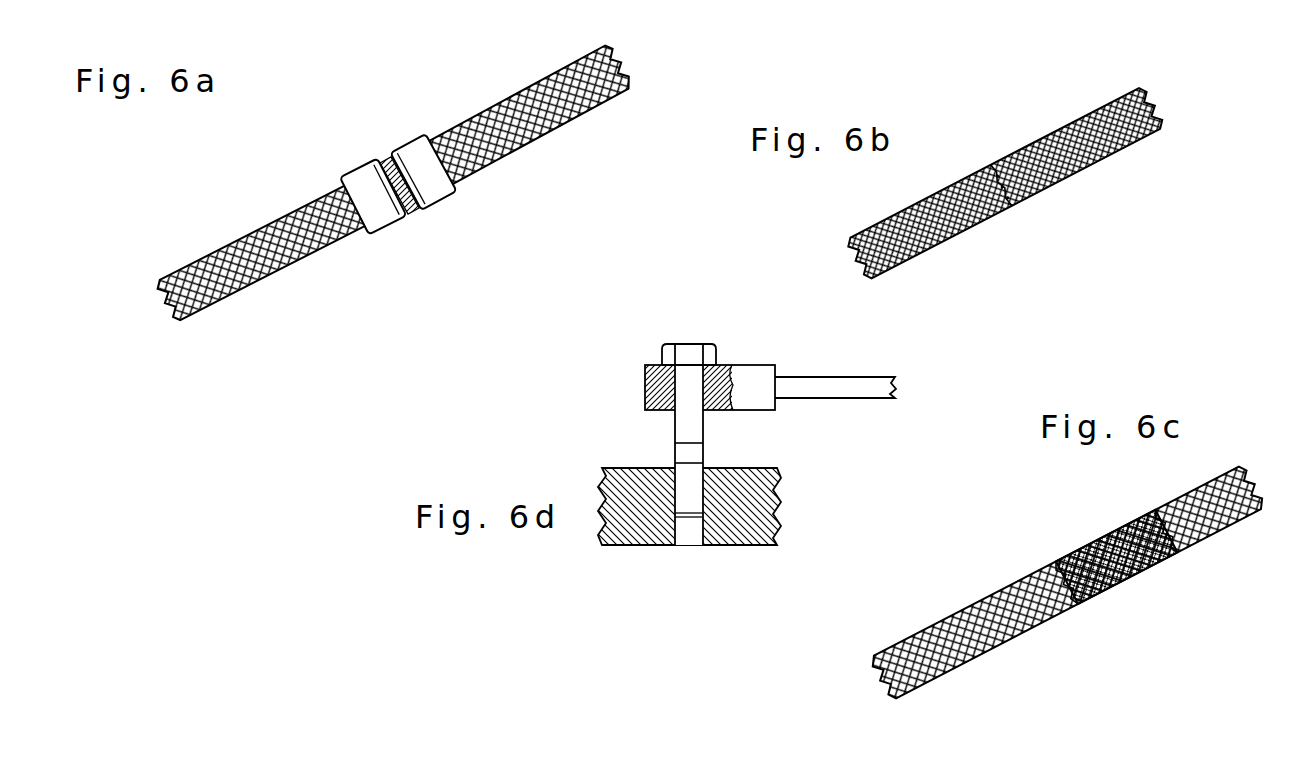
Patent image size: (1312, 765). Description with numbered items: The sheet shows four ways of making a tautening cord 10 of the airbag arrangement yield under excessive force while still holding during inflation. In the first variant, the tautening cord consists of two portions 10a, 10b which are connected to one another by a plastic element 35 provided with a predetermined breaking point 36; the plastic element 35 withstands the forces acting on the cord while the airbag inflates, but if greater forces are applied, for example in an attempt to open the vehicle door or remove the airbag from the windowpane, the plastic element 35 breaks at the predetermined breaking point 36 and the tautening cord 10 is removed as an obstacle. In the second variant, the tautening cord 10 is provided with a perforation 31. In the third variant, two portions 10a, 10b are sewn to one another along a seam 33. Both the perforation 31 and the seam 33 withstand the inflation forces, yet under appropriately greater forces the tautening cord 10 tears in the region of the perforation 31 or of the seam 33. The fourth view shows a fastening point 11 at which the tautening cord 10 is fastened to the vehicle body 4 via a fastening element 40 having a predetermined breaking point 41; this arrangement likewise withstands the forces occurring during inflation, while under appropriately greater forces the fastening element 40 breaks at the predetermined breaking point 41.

In FIG. 6D, the vehicle body 4 is at (652, 523).
In FIG. 6B, the tautening cord 10 is at (1147, 127).
In FIG. 6D, the tautening cord 10 is at (845, 390).
In FIG. 6A, the first portion of the tautening cord 10a is at (240, 277).
In FIG. 6C, the first portion of the tautening cord 10a is at (930, 680).
In FIG. 6A, the second portion of the tautening cord 10b is at (537, 120).
In FIG. 6C, the second portion of the tautening cord 10b is at (1172, 543).
In FIG. 6D, the fastening point 11 is at (753, 390).
In FIG. 6B, the perforation 31 is at (993, 177).
In FIG. 6C, the seam 33 is at (1087, 545).
In FIG. 6A, the plastic element 35 is at (367, 187).
In FIG. 6A, the predetermined breaking point 36 is at (410, 217).
In FIG. 6D, the fastening element 40 is at (688, 353).
In FIG. 6D, the predetermined breaking point 41 is at (675, 443).